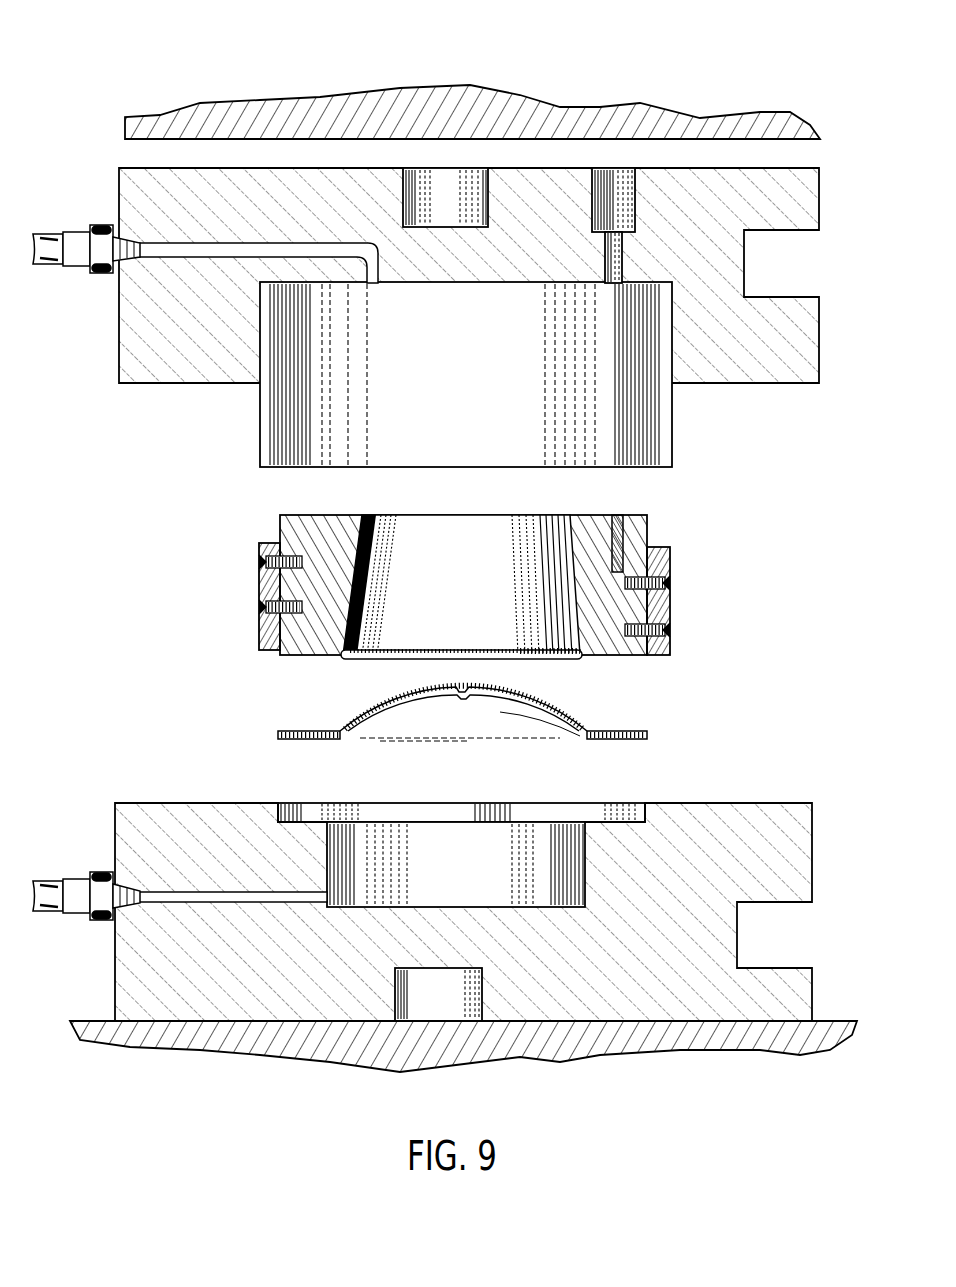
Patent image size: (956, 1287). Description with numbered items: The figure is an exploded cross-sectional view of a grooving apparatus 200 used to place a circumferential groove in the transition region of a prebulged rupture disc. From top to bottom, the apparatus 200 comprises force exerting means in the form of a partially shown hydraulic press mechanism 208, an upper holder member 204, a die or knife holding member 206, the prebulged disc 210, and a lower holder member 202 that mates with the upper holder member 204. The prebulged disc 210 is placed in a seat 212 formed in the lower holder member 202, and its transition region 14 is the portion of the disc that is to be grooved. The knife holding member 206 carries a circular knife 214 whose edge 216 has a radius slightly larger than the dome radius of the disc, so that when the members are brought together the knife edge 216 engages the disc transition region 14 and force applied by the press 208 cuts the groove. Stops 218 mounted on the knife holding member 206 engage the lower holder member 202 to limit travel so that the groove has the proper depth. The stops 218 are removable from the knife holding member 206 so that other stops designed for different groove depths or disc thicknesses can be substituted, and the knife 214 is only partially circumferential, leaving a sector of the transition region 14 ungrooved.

The grooving apparatus 200 is at (190, 83).
The hydraulic press mechanism 208 is at (723, 120).
The upper holder member 204 is at (805, 318).
The knife holding member 206 is at (469, 609).
The stops 218 is at (266, 588).
The knife edge 216 is at (352, 660).
The circular knife 214 is at (542, 658).
The disc transition region 14 is at (484, 713).
The prebulged disc 210 is at (613, 732).
The seat 212 is at (303, 807).
The lower holder member 202 is at (805, 880).